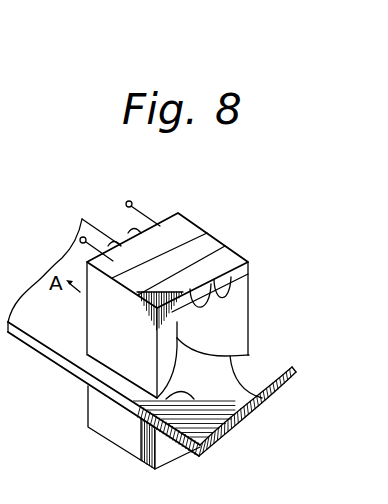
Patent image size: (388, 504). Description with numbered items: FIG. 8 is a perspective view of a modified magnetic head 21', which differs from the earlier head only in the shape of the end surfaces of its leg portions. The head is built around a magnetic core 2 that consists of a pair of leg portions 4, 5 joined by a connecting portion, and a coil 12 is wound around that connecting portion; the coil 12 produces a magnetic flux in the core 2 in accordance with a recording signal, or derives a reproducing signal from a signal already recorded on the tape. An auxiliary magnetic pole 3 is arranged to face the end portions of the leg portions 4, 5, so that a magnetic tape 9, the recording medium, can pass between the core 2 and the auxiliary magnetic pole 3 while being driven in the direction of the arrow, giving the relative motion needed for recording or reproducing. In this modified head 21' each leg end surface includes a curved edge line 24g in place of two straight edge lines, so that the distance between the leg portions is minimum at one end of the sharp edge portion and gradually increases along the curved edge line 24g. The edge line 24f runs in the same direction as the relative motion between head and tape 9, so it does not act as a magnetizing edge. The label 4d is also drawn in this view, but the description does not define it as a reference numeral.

The magnetic head 21' is at (186, 275).
The magnetic core 2 is at (221, 244).
The leg portion 4 is at (249, 288).
The coil 12 is at (133, 204).
The leg portion 5 is at (120, 320).
The auxiliary magnetic pole 3 is at (118, 430).
The edge line 24f is at (112, 380).
The curved edge line 24g is at (200, 449).
The magnetic tape 9 is at (293, 369).
The plate portion 4d is at (60, 208).